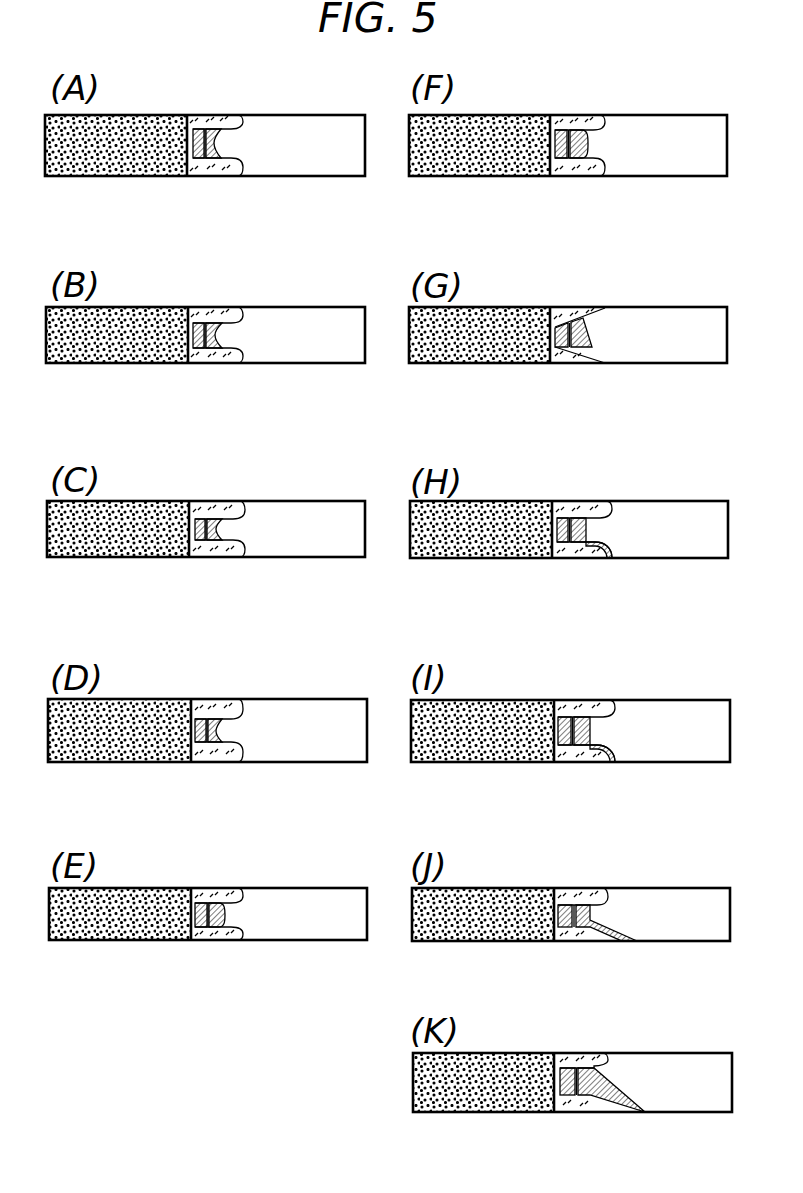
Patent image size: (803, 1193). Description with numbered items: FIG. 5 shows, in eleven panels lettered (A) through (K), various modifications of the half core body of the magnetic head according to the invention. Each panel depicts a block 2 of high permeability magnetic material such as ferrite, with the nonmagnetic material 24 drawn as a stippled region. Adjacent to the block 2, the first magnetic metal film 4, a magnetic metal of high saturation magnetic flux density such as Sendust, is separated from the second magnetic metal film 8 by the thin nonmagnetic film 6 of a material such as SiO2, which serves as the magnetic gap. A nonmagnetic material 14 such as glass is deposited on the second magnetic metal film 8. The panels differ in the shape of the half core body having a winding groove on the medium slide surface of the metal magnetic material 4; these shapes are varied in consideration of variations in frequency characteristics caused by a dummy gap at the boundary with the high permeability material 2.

The block 2 is at (337, 170).
The first magnetic metal film 4 is at (212, 130).
The nonmagnetic film 6 is at (203, 157).
The second magnetic metal film 8 is at (192, 128).
The nonmagnetic material 14 is at (193, 170).
The nonmagnetic material 24 is at (90, 170).